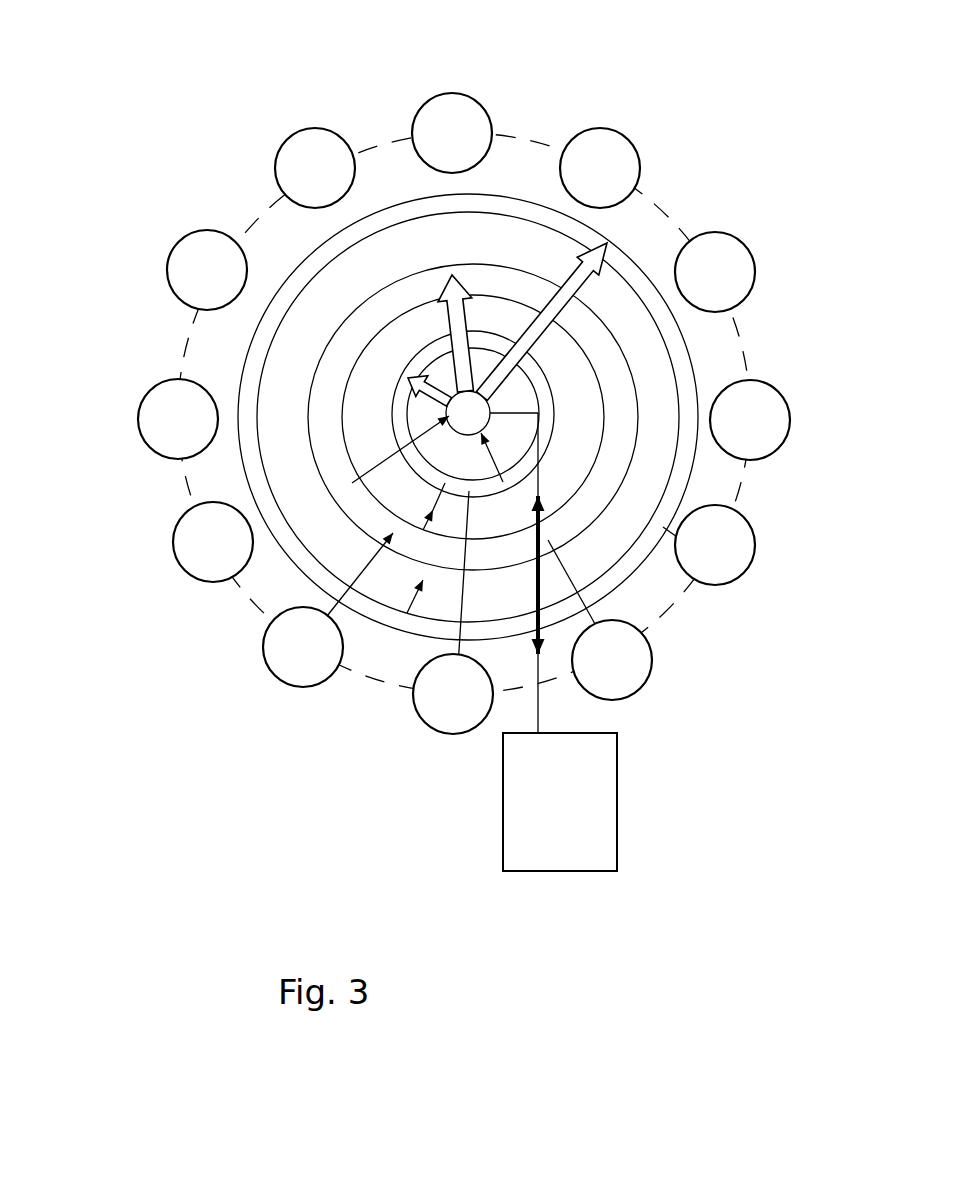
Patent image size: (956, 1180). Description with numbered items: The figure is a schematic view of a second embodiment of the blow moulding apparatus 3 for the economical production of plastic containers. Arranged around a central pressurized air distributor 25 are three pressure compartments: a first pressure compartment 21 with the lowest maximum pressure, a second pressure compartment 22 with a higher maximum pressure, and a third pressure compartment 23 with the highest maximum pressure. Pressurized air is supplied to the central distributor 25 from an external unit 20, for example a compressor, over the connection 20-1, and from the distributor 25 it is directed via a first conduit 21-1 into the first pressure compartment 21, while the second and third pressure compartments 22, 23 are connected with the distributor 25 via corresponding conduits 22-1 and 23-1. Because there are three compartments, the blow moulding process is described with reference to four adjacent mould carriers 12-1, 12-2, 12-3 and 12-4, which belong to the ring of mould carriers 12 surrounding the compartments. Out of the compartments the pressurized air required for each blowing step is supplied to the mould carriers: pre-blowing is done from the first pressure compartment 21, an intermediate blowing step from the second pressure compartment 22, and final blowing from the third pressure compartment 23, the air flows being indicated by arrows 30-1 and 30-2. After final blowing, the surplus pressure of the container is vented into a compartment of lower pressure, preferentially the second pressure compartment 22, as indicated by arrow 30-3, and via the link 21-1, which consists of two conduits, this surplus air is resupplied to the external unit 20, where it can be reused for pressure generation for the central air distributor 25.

The sensor arrangement 3 is at (692, 195).
The mould carrier 12 is at (168, 264).
The mould carrier 12-1 is at (745, 538).
The mould carrier 12-2 is at (630, 670).
The mould carrier 12-3 is at (438, 710).
The mould carrier 12-4 is at (275, 680).
The external unit 20 is at (617, 818).
The control signal path 20-1 is at (540, 516).
The first pressure compartment 21 is at (520, 205).
The first conduit 21-1 is at (528, 346).
The second pressure compartment 22 is at (363, 310).
The second field direction arrow 22-1 is at (437, 341).
The third pressure compartment 23 is at (392, 398).
The third field direction arrow 23-1 is at (392, 398).
The central pressurized air distributor 25 is at (385, 508).
The first signal path 30-1 is at (569, 575).
The second signal path 30-2 is at (418, 672).
The arrow 30-3 is at (363, 570).